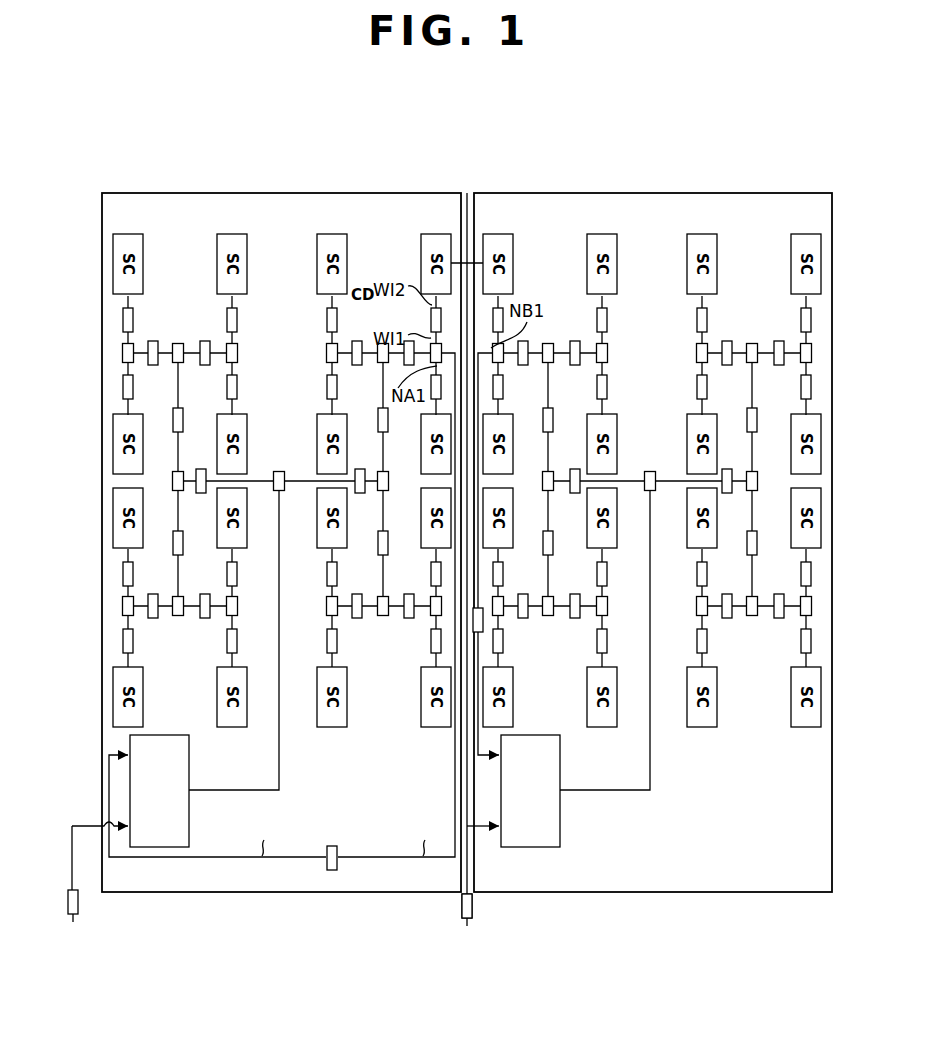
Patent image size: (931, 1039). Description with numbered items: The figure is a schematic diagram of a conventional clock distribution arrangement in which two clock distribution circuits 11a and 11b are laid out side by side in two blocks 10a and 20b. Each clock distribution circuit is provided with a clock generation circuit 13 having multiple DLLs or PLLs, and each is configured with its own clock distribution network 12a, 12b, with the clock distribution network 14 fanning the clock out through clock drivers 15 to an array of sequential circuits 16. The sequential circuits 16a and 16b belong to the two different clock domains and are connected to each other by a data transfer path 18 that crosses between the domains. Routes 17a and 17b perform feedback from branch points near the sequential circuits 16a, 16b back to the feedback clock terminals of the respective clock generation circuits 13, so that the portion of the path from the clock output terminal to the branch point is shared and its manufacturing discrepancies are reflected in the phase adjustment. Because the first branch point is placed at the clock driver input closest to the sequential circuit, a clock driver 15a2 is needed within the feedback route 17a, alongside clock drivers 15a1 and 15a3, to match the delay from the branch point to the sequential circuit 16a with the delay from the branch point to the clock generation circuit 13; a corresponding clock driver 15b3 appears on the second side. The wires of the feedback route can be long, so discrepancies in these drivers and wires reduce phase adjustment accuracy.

The first semiconductor chip 10a is at (131, 193).
The second semiconductor chip 20b is at (726, 193).
The clock distribution circuit 11a is at (243, 222).
The clock distribution circuit 11b is at (668, 226).
The clock distribution network 12a is at (228, 790).
The clock distribution network 12b is at (600, 790).
The clock generation circuit 13 is at (175, 848).
The clock distribution network 14 is at (651, 471).
The clock driver 15 is at (201, 493).
The clock driver 15a1 is at (431, 318).
The clock driver 15a2 is at (332, 871).
The clock driver 15a3 is at (73, 923).
The clock driver 15b3 is at (462, 906).
The sequential circuit 16 is at (143, 690).
The sequential circuit 16a is at (436, 233).
The sequential circuit 16b is at (498, 233).
The route 17a is at (140, 860).
The route 17b is at (480, 762).
The data transfer path 18 is at (468, 262).